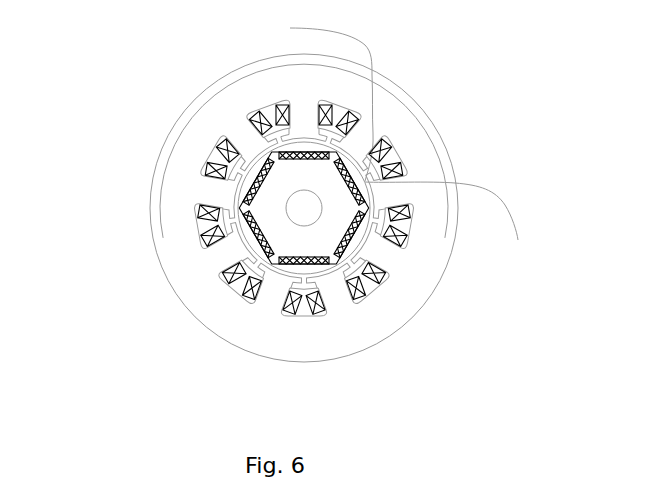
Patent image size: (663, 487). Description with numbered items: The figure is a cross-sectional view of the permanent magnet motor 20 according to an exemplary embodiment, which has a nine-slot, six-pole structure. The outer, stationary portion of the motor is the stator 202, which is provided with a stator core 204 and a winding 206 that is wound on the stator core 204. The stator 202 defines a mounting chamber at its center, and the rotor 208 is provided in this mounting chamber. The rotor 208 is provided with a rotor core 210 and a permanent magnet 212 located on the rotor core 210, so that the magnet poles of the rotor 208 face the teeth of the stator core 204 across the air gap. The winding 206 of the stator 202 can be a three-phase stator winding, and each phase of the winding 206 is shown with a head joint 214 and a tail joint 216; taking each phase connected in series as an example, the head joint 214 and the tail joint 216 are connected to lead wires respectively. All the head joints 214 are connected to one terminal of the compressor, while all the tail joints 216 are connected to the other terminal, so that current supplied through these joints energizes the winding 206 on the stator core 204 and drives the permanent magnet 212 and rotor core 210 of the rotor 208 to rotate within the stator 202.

The permanent magnet motor 20 is at (334, 390).
The stator 202 is at (103, 107).
The stator core 204 is at (180, 146).
The winding 206 is at (215, 167).
The rotor 208 is at (103, 213).
The rotor core 210 is at (250, 230).
The permanent magnet 212 is at (265, 247).
The head joint 214 is at (480, 187).
The tail joint 216 is at (372, 57).